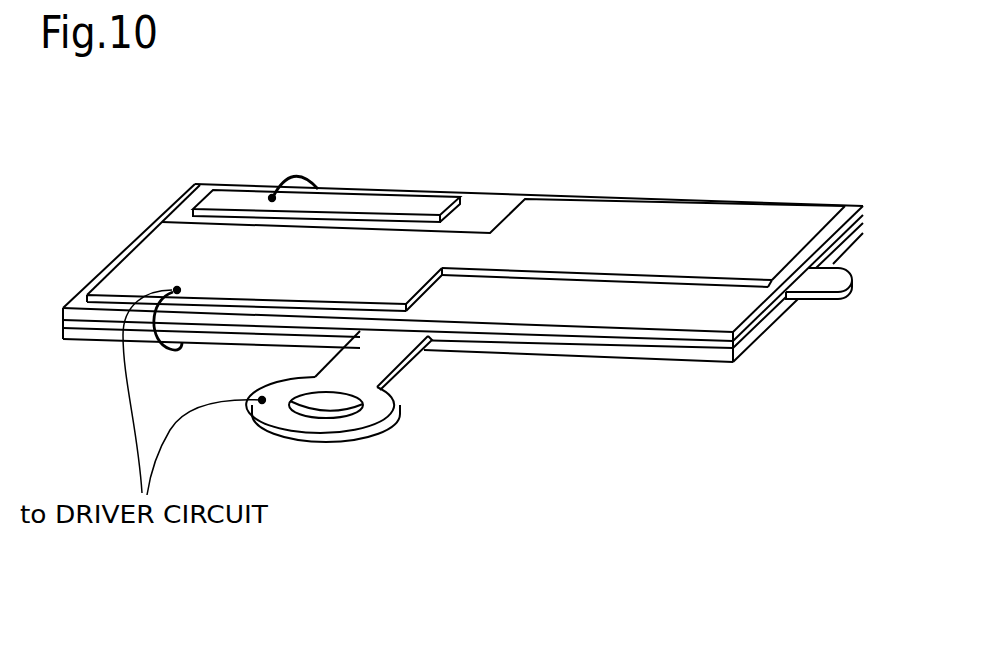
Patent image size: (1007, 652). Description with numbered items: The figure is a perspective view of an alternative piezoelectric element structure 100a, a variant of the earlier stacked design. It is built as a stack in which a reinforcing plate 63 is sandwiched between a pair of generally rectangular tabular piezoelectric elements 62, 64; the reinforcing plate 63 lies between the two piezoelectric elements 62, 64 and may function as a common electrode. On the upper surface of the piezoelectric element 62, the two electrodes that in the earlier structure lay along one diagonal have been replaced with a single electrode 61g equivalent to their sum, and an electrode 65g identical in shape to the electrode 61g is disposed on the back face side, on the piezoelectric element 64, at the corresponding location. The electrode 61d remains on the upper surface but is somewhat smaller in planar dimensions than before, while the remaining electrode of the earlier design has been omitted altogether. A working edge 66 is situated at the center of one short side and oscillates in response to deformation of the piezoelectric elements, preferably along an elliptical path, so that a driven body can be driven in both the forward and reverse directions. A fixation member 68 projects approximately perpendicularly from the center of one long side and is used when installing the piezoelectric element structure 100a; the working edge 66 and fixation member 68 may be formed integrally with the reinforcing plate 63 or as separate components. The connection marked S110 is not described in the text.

The piezoelectric element structure 100a is at (645, 175).
The electrode 61d is at (358, 200).
The electrode 61g is at (734, 212).
The electrode 65g is at (808, 243).
The piezoelectric element 62 is at (607, 335).
The reinforcing plate 63 is at (575, 342).
The piezoelectric element 64 is at (541, 349).
The working edge 66 is at (845, 268).
The fixation member 68 is at (377, 363).
The solder connection point S110 is at (271, 196).